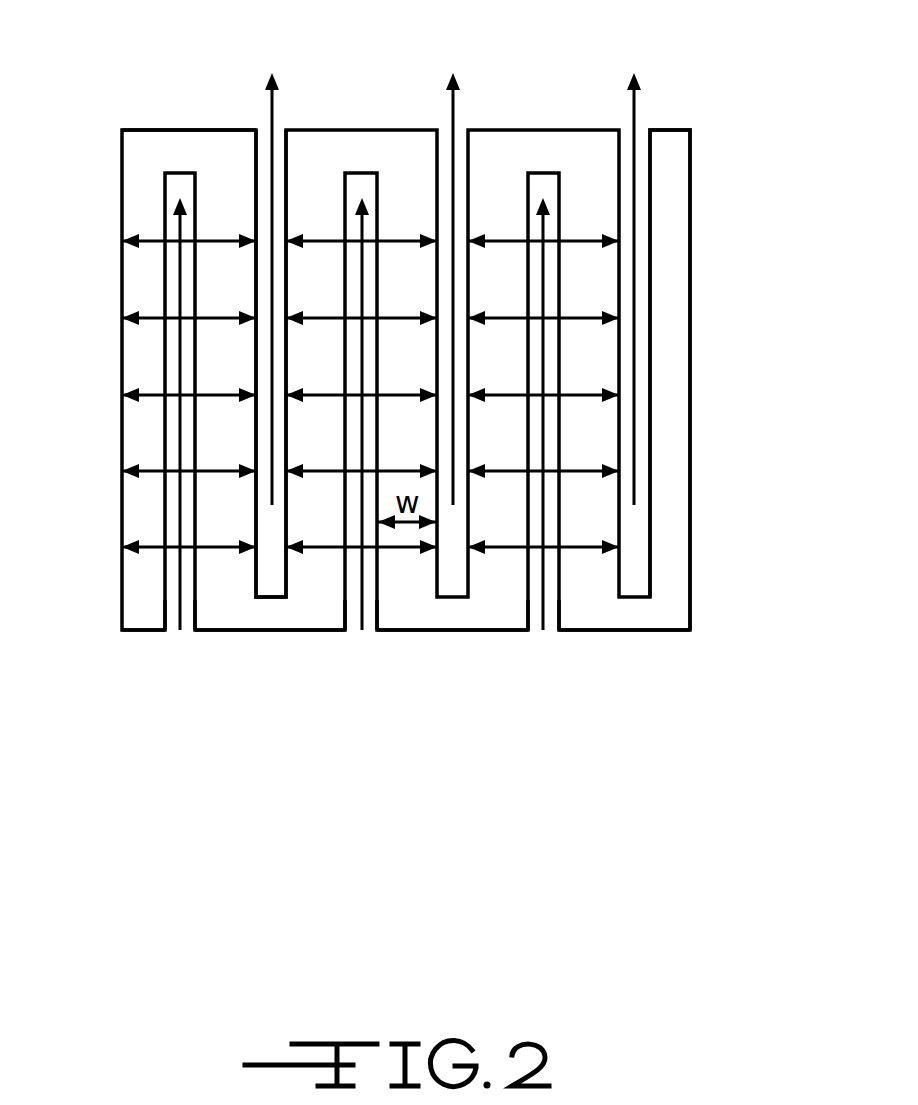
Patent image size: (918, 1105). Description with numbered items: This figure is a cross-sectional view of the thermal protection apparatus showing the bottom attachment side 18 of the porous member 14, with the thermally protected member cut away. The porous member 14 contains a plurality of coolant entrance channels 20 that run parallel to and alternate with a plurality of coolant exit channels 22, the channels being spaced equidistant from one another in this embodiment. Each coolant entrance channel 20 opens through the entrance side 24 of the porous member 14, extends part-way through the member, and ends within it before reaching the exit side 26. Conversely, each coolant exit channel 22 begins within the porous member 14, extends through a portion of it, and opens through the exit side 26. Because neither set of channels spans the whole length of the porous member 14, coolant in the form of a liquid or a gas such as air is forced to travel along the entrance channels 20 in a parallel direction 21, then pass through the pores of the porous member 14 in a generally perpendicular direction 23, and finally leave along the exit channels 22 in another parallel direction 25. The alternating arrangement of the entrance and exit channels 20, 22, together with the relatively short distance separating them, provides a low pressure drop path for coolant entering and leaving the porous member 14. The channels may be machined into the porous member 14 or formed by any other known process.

The porous member 14 is at (678, 615).
The bottom attachment side 18 is at (690, 278).
The coolant entrance channels 20 is at (186, 626).
The parallel direction 21 is at (178, 433).
The coolant exit channels 22 is at (278, 137).
The generally perpendicular direction 23 is at (218, 240).
The entrance side 24 is at (277, 630).
The parallel direction 25 is at (273, 210).
The exit side 26 is at (155, 128).